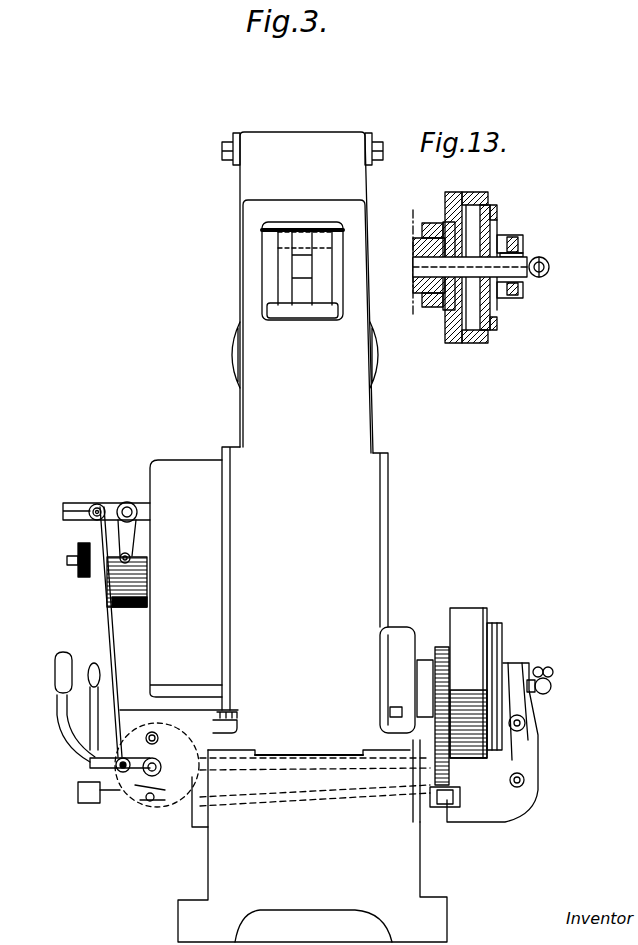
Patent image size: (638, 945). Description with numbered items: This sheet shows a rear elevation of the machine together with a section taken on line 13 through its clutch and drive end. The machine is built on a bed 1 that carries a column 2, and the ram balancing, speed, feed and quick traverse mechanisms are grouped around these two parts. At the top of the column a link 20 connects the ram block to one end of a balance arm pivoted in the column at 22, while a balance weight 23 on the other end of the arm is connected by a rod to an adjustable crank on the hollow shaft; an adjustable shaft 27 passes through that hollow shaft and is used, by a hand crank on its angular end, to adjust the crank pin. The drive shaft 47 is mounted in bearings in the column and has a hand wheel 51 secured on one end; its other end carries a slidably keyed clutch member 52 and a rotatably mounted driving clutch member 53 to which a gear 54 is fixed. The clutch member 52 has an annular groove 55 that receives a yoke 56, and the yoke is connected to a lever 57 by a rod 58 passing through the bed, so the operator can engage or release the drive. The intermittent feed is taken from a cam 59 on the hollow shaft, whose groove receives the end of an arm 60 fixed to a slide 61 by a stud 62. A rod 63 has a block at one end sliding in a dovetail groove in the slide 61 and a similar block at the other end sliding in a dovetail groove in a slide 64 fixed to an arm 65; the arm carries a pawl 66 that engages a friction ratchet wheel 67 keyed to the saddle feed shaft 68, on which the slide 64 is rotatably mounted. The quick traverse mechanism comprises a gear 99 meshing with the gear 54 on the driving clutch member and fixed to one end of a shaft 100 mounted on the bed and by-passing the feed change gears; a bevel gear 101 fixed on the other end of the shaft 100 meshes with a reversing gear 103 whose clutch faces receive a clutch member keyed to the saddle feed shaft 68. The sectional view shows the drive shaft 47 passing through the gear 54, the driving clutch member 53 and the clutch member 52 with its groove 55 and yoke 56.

In FIG. 3, the bed 1 is at (217, 856).
In FIG. 3, the column 2 is at (355, 408).
In FIG. 3, the pivot 13 is at (418, 687).
In FIG. 3, the link 20 is at (286, 276).
In FIG. 3, the pivot 22 is at (233, 353).
In FIG. 3, the balance weight 23 is at (308, 325).
In FIG. 3, the adjustable shaft 27 is at (72, 563).
In FIG. 3, the drive shaft 47 is at (538, 676).
In FIG. 13, the drive shaft 47 is at (527, 261).
In FIG. 3, the hand wheel 51 is at (97, 712).
In FIG. 3, the clutch member 52 is at (502, 632).
In FIG. 13, the clutch member 52 is at (500, 305).
In FIG. 3, the driving clutch member 53 is at (471, 612).
In FIG. 13, the driving clutch member 53 is at (468, 344).
In FIG. 3, the gear 54 is at (438, 657).
In FIG. 13, the gear 54 is at (433, 302).
In FIG. 3, the annular groove 55 is at (511, 663).
In FIG. 13, the annular groove 55 is at (520, 290).
In FIG. 3, the yoke 56 is at (526, 722).
In FIG. 13, the yoke 56 is at (512, 238).
In FIG. 3, the lever 57 is at (90, 653).
In FIG. 3, the rod 58 is at (297, 795).
In FIG. 3, the cam 59 is at (133, 583).
In FIG. 3, the arm 60 is at (128, 543).
In FIG. 3, the slide 61 is at (62, 513).
In FIG. 3, the stud 62 is at (108, 517).
In FIG. 3, the rod 63 is at (112, 628).
In FIG. 3, the slide 64 is at (107, 775).
In FIG. 3, the arm 65 is at (160, 746).
In FIG. 3, the pawl 66 is at (149, 738).
In FIG. 3, the friction ratchet wheel 67 is at (135, 790).
In FIG. 3, the saddle feed shaft 68 is at (158, 792).
In FIG. 3, the gear 99 is at (448, 773).
In FIG. 3, the shaft 100 is at (376, 772).
In FIG. 3, the bevel gear 101 is at (207, 789).
In FIG. 3, the reversing gear 103 is at (128, 800).